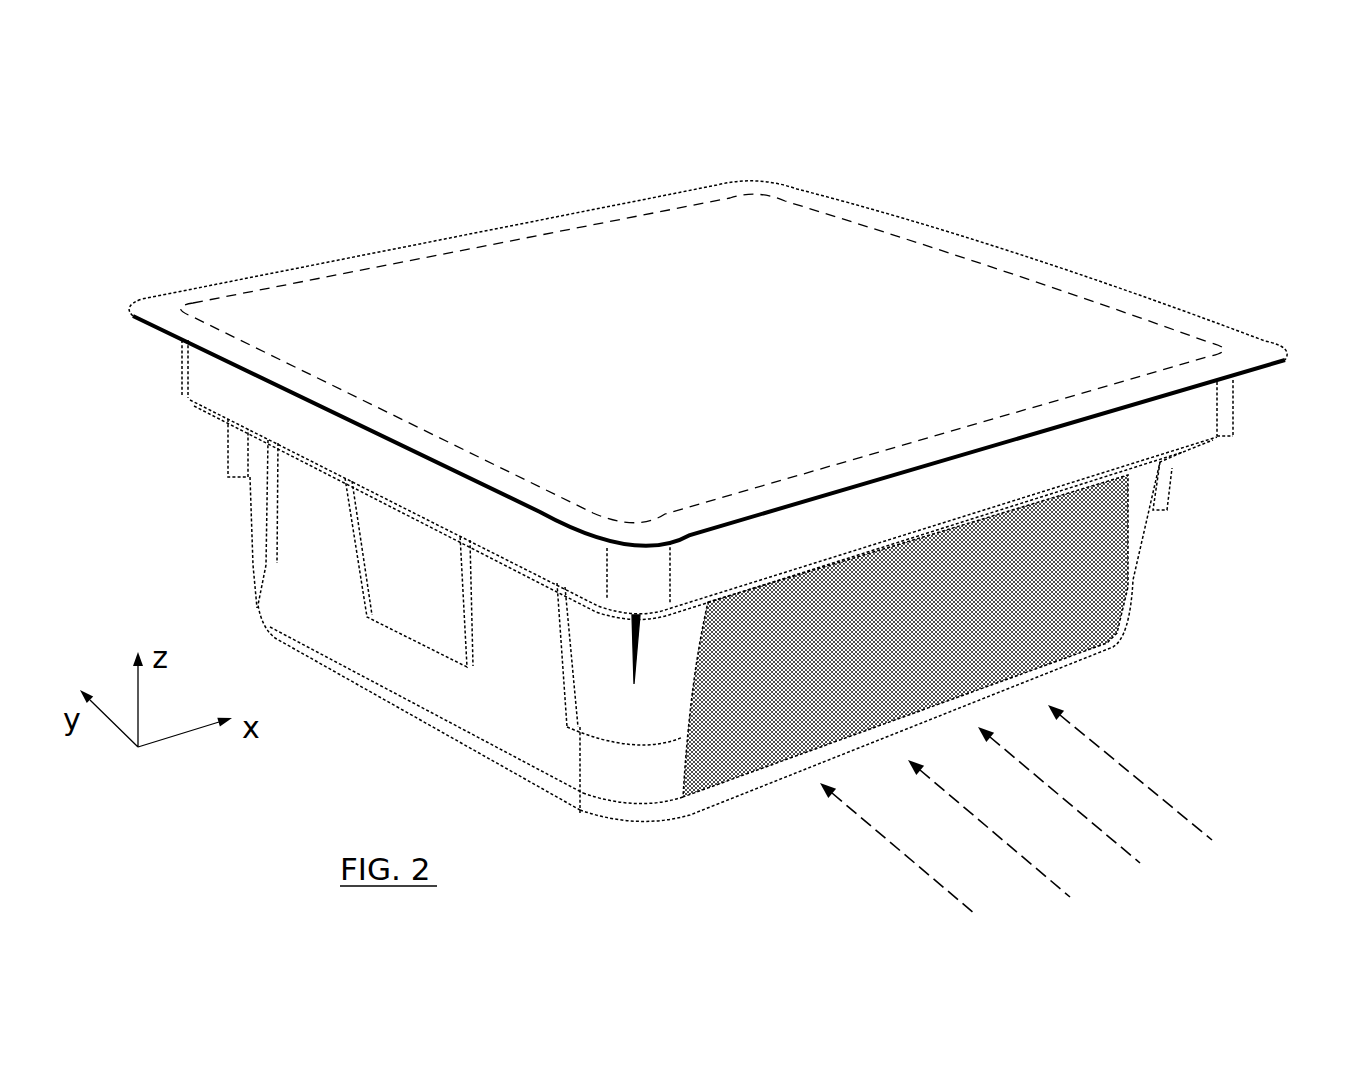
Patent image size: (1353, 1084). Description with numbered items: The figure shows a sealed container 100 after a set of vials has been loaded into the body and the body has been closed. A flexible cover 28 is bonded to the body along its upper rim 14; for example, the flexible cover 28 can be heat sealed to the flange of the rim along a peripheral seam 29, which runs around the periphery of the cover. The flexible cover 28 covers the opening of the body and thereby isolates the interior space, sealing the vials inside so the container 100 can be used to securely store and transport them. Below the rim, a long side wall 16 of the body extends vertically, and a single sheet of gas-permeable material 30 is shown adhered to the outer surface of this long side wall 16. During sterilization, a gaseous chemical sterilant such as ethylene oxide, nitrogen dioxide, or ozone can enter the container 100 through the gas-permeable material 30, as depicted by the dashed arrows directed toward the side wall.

The container 100 is at (1047, 147).
The upper rim 14 is at (380, 241).
The long side wall 16 is at (763, 580).
The flexible cover 28 is at (710, 314).
The peripheral seam 29 is at (1120, 312).
The gas-permeable material 30 is at (1123, 587).